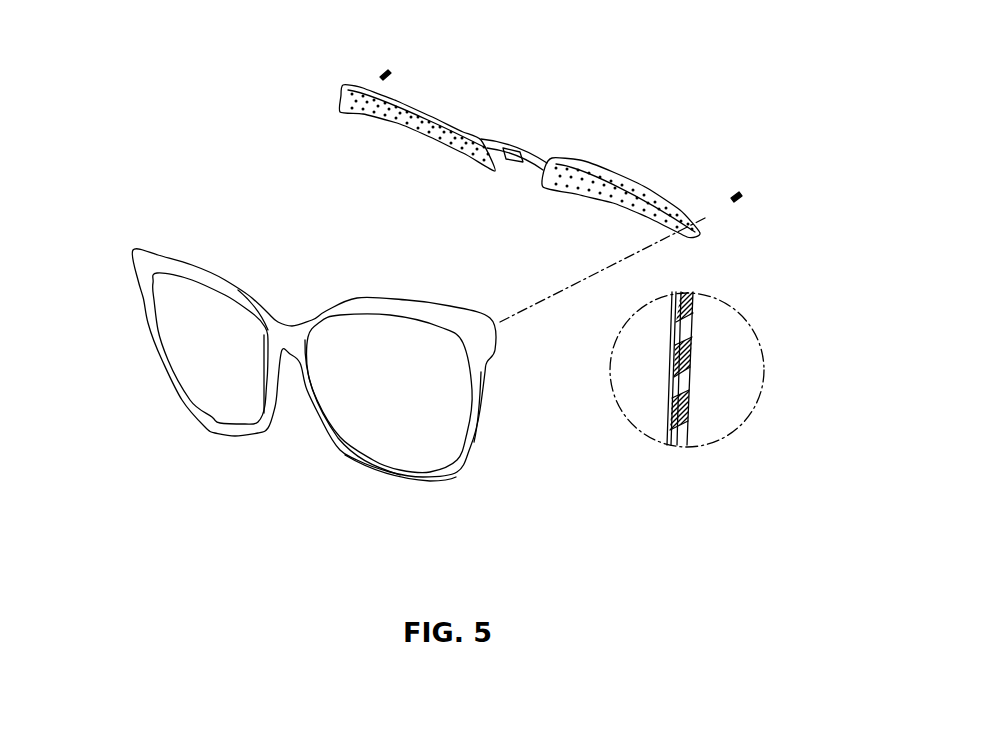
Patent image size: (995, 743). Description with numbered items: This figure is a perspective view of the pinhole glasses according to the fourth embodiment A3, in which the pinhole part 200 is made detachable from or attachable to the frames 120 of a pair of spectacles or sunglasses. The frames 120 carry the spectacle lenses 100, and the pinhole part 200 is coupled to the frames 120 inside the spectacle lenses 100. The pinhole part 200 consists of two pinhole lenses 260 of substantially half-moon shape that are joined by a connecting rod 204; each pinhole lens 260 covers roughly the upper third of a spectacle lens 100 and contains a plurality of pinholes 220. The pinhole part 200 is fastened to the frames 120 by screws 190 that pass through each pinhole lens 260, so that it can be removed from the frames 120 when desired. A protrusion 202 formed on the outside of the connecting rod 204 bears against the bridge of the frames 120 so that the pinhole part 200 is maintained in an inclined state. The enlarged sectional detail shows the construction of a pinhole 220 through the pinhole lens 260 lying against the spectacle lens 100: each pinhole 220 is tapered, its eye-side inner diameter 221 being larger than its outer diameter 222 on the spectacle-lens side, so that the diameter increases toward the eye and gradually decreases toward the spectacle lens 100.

The spectacle lens 100 is at (380, 447).
The frame 120 is at (145, 250).
The screw 190 is at (738, 200).
The pinhole part 200 is at (540, 244).
The protrusion 202 is at (510, 163).
The connecting rod 204 is at (497, 145).
The pinhole 220 is at (343, 104).
The inner diameter 221 is at (690, 380).
The outer diameter 222 is at (668, 387).
The pinhole lens 260 is at (411, 106).
The fourth embodiment A3 is at (210, 237).